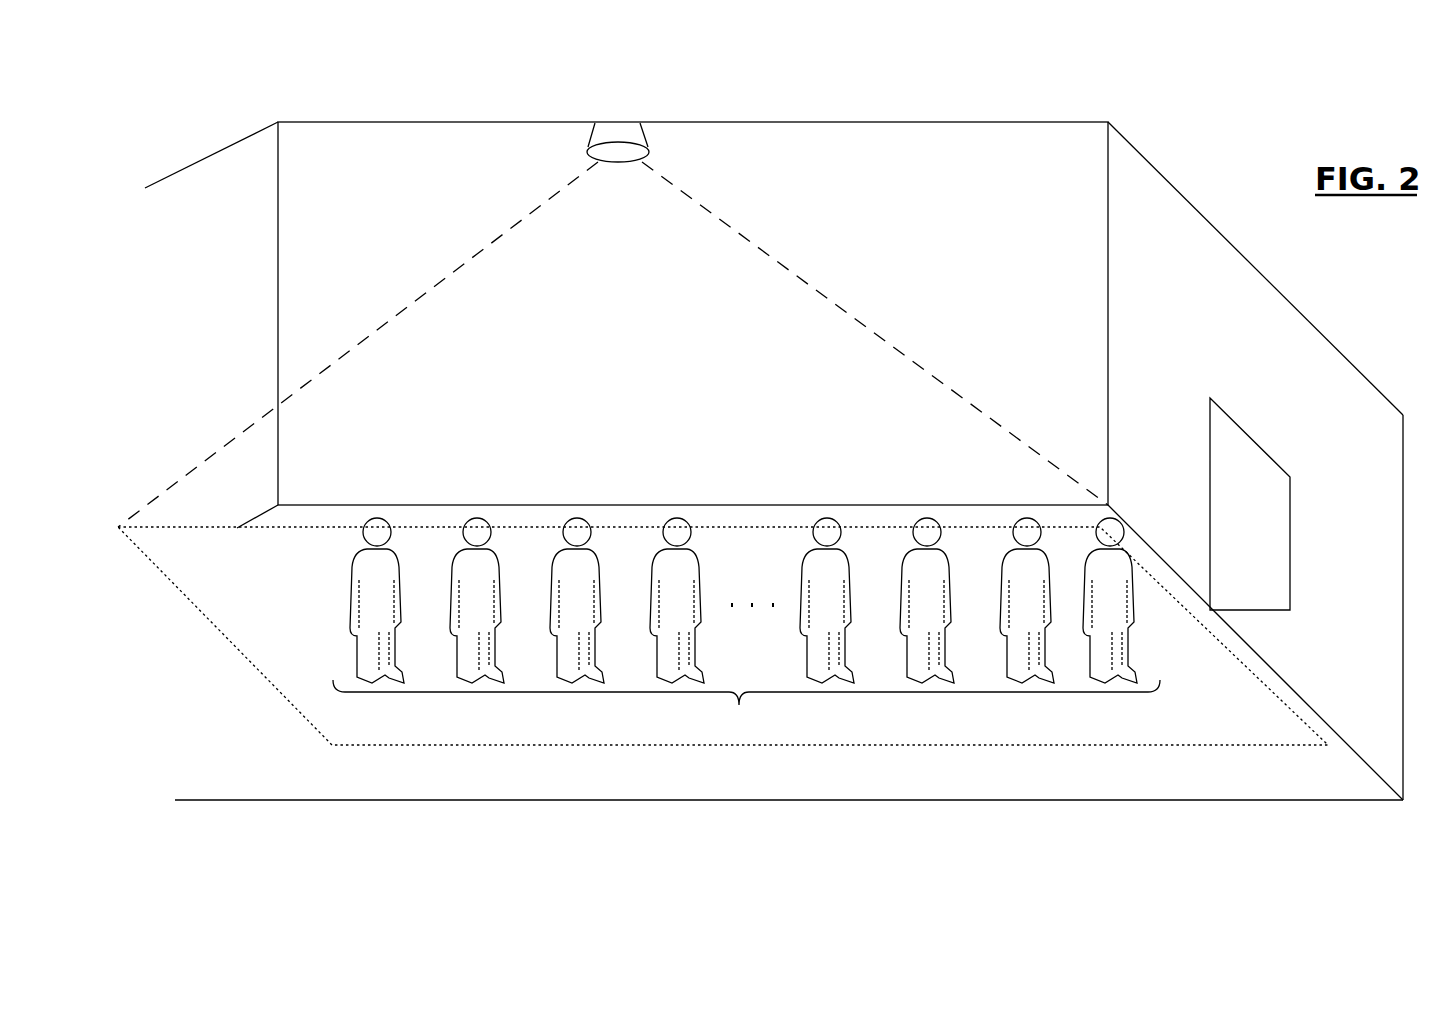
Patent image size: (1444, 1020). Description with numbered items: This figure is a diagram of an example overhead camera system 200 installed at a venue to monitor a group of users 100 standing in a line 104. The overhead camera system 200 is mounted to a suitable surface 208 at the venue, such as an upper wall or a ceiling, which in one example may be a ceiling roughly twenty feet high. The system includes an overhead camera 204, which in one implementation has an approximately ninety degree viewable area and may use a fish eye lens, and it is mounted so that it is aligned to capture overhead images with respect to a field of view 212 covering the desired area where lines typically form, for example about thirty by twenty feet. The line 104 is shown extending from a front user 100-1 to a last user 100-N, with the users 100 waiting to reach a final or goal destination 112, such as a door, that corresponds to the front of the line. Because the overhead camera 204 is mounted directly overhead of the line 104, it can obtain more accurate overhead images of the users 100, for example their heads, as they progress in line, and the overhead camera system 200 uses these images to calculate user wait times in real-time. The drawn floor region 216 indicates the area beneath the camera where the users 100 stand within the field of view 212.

The surface 208 is at (354, 122).
The overhead camera system 200 is at (524, 152).
The overhead camera 204 is at (618, 163).
The field of view 212 is at (872, 322).
The line 104 is at (413, 442).
The destination 112 is at (1265, 442).
The front user 100-1 is at (1118, 522).
The last user 100-N is at (352, 590).
The users 100 is at (730, 589).
The floor area 216 is at (822, 745).